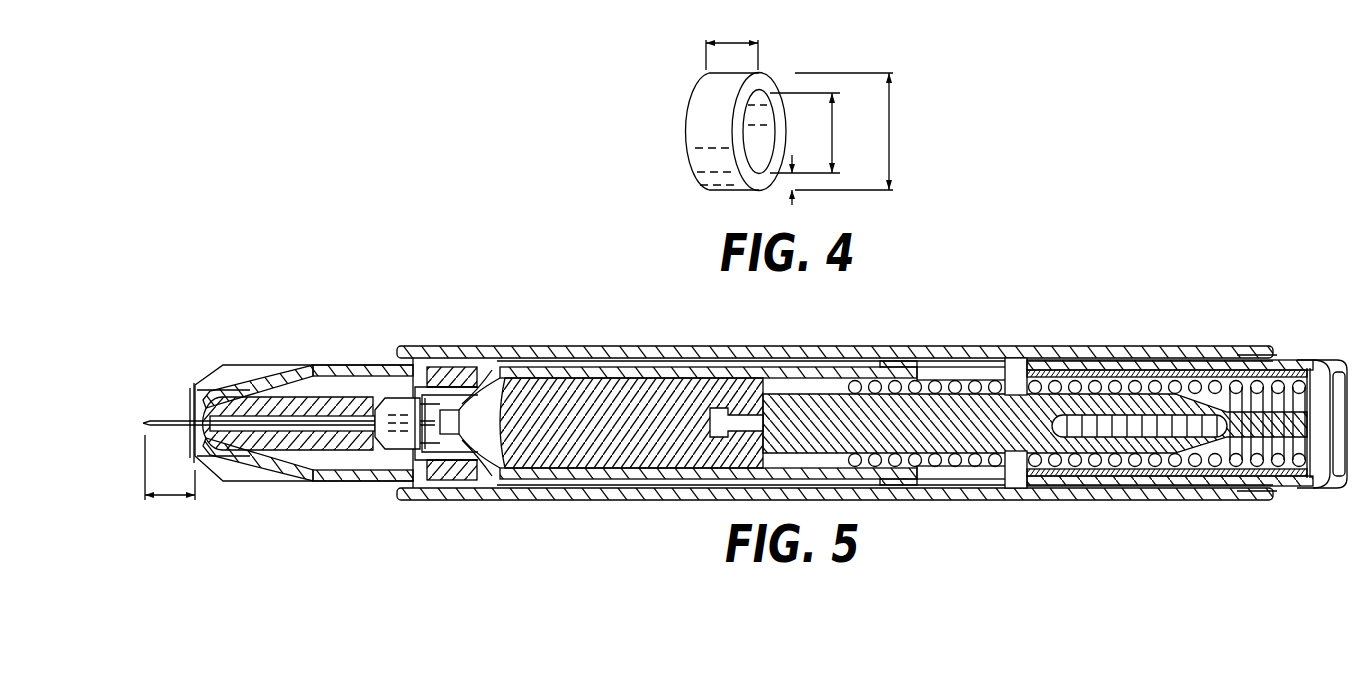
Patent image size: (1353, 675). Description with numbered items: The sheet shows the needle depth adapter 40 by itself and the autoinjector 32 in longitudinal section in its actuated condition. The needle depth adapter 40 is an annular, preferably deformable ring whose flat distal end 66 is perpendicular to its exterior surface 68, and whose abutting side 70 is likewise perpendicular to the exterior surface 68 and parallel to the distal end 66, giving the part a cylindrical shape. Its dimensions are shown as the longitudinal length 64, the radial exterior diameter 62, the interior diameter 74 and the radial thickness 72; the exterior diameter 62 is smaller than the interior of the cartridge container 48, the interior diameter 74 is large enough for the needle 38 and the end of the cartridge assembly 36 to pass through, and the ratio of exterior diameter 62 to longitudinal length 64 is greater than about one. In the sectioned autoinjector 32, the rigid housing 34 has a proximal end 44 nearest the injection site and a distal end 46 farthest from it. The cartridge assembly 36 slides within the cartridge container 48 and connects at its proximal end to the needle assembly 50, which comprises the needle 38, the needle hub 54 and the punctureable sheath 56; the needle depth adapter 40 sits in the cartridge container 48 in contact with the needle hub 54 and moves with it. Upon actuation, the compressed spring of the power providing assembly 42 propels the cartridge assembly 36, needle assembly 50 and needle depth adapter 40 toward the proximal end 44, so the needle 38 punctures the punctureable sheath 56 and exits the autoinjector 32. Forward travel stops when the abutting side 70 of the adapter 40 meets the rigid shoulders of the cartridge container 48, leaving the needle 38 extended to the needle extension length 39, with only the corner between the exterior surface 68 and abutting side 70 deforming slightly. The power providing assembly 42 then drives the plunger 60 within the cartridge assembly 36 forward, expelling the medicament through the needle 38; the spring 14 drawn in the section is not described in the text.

In FIG. 5, the drive spring 14 is at (1112, 386).
In FIG. 5, the autoinjector 32 is at (347, 322).
In FIG. 5, the housing 34 is at (560, 350).
In FIG. 5, the cartridge assembly 36 is at (725, 447).
In FIG. 5, the needle 38 is at (180, 420).
In FIG. 5, the needle extension length 39 is at (168, 497).
In FIG. 4, the needle depth adapter 40 is at (645, 70).
In FIG. 5, the needle depth adapter 40 is at (467, 376).
In FIG. 5, the power providing assembly 42 is at (1160, 447).
In FIG. 5, the proximal end 44 is at (195, 392).
In FIG. 5, the distal end 46 is at (1337, 432).
In FIG. 5, the cartridge container 48 is at (407, 480).
In FIG. 5, the needle assembly 50 is at (358, 435).
In FIG. 5, the needle hub 54 is at (410, 442).
In FIG. 5, the punctureable sheath 56 is at (292, 400).
In FIG. 5, the plunger 60 is at (603, 440).
In FIG. 4, the exterior diameter 62 is at (891, 104).
In FIG. 4, the longitudinal length 64 is at (738, 43).
In FIG. 4, the distal end 66 is at (766, 90).
In FIG. 5, the distal end 66 is at (488, 470).
In FIG. 4, the exterior surface 68 is at (727, 191).
In FIG. 5, the exterior surface 68 is at (462, 480).
In FIG. 4, the abutting side 70 is at (681, 125).
In FIG. 5, the abutting side 70 is at (427, 381).
In FIG. 4, the radial thickness 72 is at (795, 186).
In FIG. 4, the interior diameter 74 is at (835, 113).